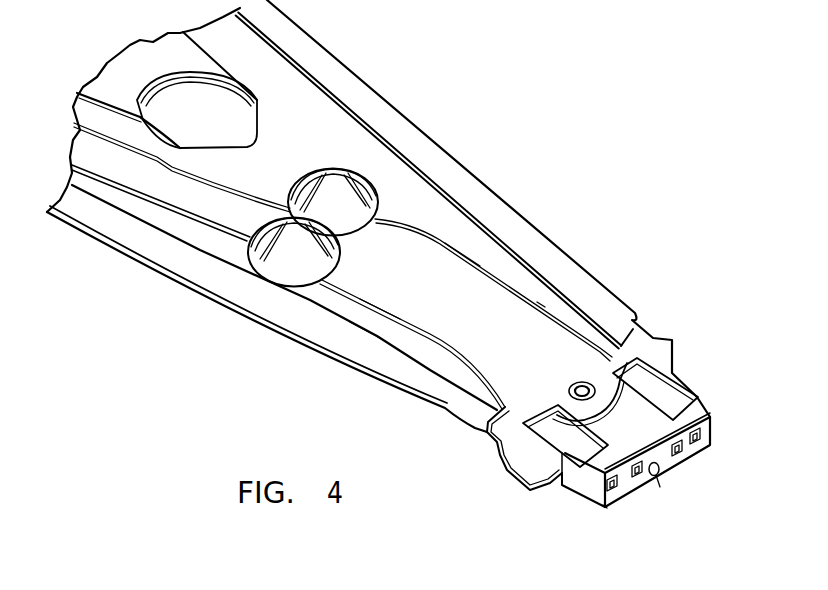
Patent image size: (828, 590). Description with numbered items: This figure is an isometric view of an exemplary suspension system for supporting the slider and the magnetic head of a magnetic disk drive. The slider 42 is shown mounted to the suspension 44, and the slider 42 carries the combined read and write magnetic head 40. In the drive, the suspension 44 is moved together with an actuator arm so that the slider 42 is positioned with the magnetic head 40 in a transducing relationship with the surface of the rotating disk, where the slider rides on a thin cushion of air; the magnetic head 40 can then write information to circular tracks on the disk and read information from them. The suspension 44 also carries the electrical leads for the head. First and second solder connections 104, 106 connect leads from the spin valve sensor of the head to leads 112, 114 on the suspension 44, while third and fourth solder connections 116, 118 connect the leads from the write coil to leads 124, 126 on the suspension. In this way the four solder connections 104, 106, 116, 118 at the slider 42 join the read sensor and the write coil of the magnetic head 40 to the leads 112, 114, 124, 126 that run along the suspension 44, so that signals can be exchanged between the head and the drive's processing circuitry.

The suspension 44 is at (485, 182).
The lead 114 is at (537, 302).
The lead 126 is at (463, 253).
The lead 124 is at (392, 311).
The lead 112 is at (370, 306).
The second solder connection 106 is at (712, 418).
The slider 42 is at (554, 497).
The first solder connection 104 is at (604, 507).
The third solder connection 116 is at (637, 477).
The fourth solder connection 118 is at (682, 452).
The magnetic head 40 is at (662, 490).